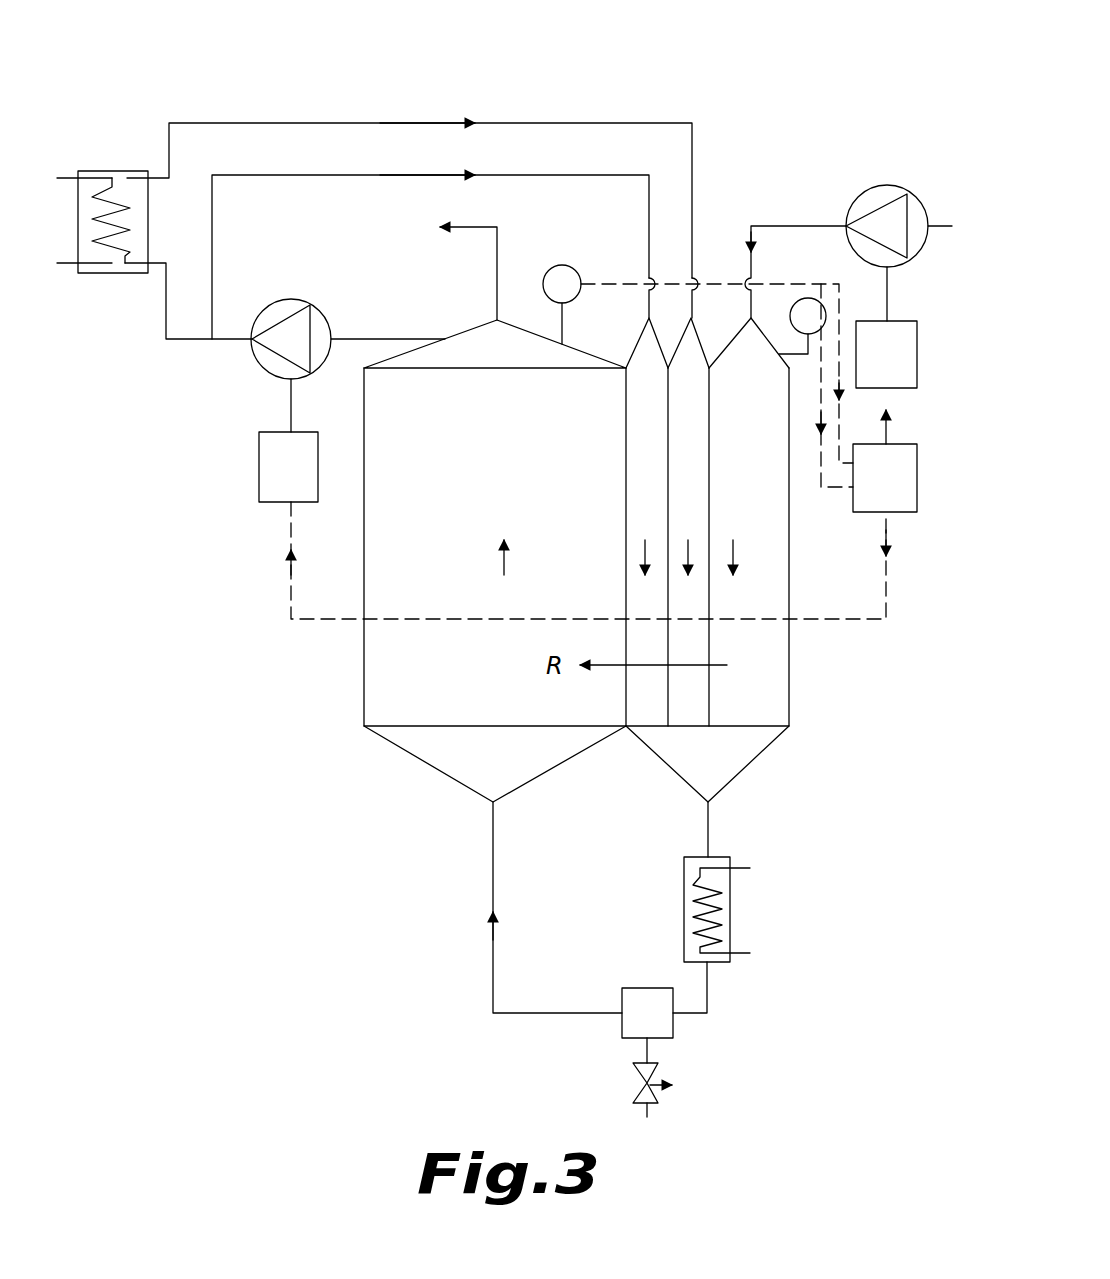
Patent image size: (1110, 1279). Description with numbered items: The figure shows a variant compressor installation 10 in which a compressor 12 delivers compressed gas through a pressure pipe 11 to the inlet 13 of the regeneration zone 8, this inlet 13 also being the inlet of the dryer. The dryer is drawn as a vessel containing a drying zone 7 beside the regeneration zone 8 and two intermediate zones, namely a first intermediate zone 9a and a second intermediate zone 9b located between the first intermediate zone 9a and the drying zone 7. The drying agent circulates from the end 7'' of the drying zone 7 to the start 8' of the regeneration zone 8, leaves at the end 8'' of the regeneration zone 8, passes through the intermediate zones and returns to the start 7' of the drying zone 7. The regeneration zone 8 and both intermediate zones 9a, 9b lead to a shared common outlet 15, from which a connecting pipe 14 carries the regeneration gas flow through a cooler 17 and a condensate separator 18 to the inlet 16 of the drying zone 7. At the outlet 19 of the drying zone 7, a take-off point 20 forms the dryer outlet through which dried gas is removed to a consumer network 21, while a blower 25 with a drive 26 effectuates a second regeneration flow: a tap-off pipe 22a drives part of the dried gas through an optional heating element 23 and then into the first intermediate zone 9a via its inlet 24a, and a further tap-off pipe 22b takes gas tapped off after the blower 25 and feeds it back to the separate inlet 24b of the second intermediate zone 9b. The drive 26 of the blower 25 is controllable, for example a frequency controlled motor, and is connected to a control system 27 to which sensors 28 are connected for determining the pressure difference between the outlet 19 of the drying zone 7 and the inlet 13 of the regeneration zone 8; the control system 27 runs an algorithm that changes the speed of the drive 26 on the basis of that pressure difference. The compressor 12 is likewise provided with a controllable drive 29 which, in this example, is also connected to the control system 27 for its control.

The compressor installation 10 is at (812, 66).
The drying zone 7 is at (576, 561).
The start of the drying zone 7' is at (603, 547).
The end of the drying zone 7'' is at (396, 547).
The regeneration zone 8 is at (727, 547).
The start of the regeneration zone 8' is at (774, 499).
The end of the regeneration zone 8'' is at (729, 499).
The intermediate zone 9a is at (707, 451).
The second intermediate zone 9b is at (665, 477).
The pressure pipe 11 is at (752, 268).
The compressor 12 is at (910, 207).
The inlet of the regeneration zone 13 is at (784, 335).
The connecting pipe 14 is at (492, 992).
The common outlet 15 is at (753, 762).
The inlet of the drying zone 16 is at (440, 775).
The cooler 17 is at (732, 909).
The condensate separator 18 is at (653, 1028).
The outlet of the drying zone 19 is at (507, 320).
The take-off point 20 is at (495, 317).
The consumer network 21 is at (469, 258).
The tap-off pipe 22a is at (246, 122).
The tap-off pipe 22b is at (300, 174).
The heating element 23 is at (132, 225).
The inlet of the intermediate zone 24a is at (712, 345).
The inlet of the second intermediate zone 24b is at (637, 343).
The blower 25 is at (270, 360).
The drive 26 is at (288, 478).
The control system 27 is at (893, 477).
The sensors 28 is at (570, 278).
The controllable drive 29 is at (890, 352).